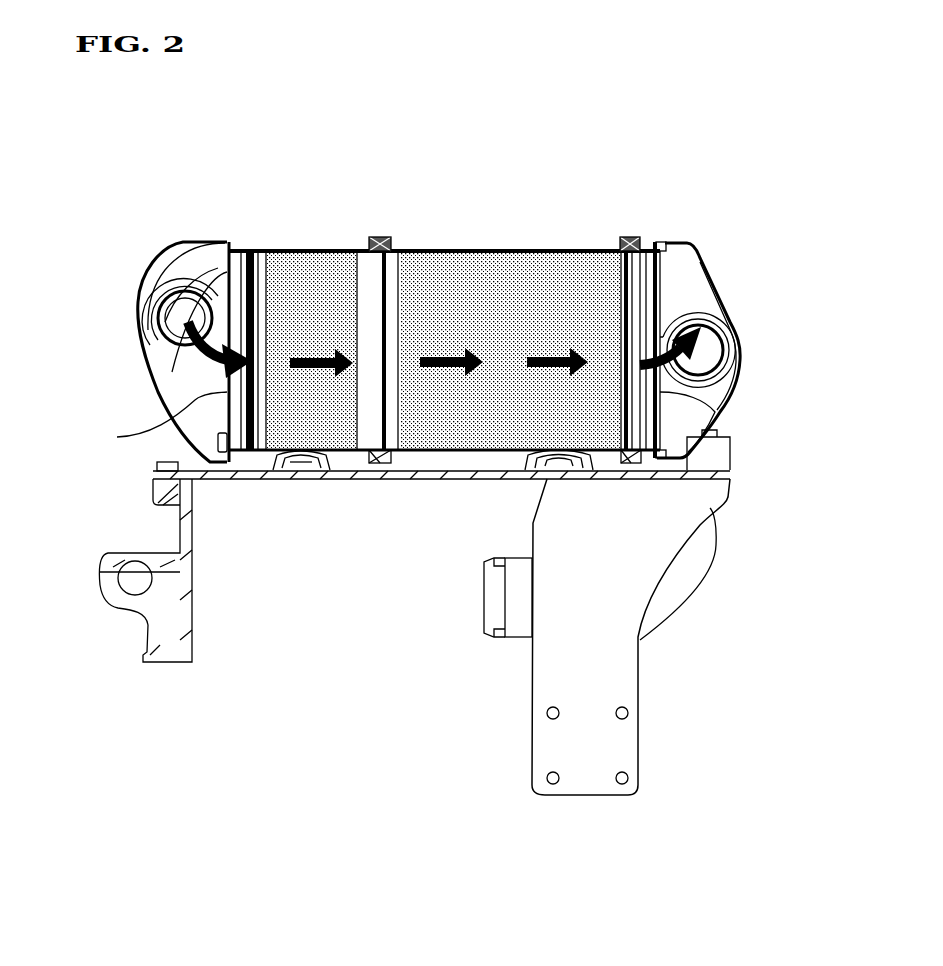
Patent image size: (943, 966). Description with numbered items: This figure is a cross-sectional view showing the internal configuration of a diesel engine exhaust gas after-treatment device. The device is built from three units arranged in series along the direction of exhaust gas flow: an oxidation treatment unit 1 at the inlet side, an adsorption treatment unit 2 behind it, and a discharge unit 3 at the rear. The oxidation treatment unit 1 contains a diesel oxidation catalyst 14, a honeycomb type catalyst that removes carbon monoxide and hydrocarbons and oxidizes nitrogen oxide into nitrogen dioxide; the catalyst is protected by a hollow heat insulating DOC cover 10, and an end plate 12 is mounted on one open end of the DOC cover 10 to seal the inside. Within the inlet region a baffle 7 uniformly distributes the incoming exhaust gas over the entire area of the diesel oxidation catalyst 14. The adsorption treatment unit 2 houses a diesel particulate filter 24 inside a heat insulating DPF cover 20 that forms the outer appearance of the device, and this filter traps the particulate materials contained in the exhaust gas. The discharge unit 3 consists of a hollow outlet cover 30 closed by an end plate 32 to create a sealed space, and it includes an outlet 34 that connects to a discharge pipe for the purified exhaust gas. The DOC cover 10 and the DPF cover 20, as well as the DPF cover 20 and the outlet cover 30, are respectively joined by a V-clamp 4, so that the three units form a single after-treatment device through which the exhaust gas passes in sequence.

The oxidation treatment unit 1 is at (216, 299).
The adsorption treatment unit 2 is at (530, 299).
The discharge unit 3 is at (734, 321).
The V-clamp 4 is at (378, 237).
The baffle 7 is at (161, 421).
The DOC cover 10 is at (283, 247).
The end plate 12 is at (145, 357).
The diesel oxidation catalyst 14 is at (323, 430).
The DPF cover 20 is at (550, 250).
The diesel particulate filter 24 is at (440, 435).
The outlet cover 30 is at (647, 247).
The end plate 32 is at (723, 292).
The outlet 34 is at (712, 352).